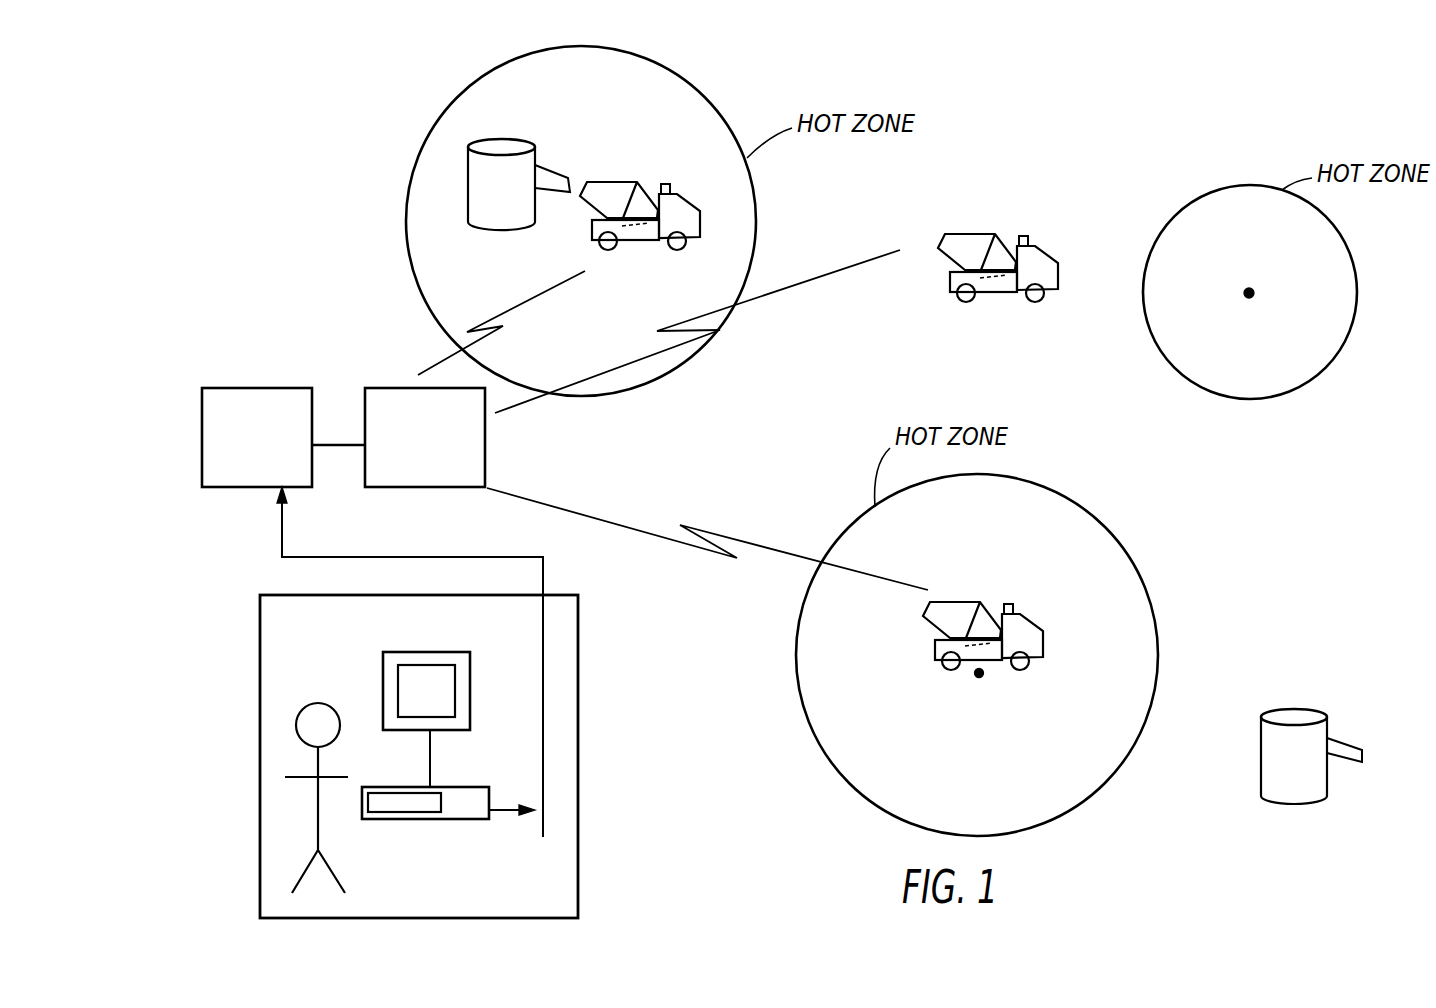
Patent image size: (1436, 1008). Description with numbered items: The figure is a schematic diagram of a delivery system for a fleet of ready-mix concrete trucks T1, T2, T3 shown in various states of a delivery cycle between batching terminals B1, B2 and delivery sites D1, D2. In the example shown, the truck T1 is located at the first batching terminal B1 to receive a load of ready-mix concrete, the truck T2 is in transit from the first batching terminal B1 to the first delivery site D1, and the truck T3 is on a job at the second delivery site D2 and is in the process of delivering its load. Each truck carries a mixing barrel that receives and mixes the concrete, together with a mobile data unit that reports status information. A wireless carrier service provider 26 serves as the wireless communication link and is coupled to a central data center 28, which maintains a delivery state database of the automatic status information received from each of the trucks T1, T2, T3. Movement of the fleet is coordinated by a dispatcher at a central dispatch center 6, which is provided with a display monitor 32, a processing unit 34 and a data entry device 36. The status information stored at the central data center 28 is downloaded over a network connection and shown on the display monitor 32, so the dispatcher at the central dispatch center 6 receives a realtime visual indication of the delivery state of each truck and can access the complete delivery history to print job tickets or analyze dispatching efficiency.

The central dispatch center 6 is at (451, 756).
The wireless carrier service provider 26 is at (488, 455).
The central data center 28 is at (198, 445).
The display monitor 32 is at (403, 650).
The processing unit 34 is at (473, 810).
The data entry device 36 is at (408, 807).
The truck T1 is at (649, 207).
The truck T2 is at (1008, 252).
The truck T3 is at (999, 615).
The first batching terminal B1 is at (478, 188).
The second batching terminal B2 is at (1258, 747).
The first delivery site D1 is at (1274, 304).
The second delivery site D2 is at (997, 684).